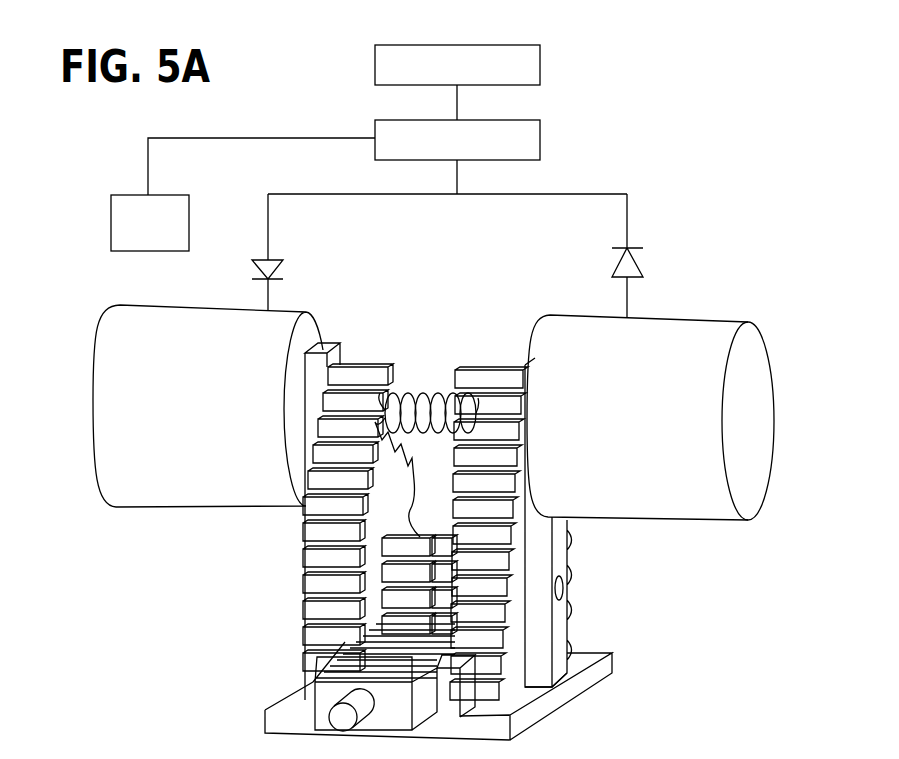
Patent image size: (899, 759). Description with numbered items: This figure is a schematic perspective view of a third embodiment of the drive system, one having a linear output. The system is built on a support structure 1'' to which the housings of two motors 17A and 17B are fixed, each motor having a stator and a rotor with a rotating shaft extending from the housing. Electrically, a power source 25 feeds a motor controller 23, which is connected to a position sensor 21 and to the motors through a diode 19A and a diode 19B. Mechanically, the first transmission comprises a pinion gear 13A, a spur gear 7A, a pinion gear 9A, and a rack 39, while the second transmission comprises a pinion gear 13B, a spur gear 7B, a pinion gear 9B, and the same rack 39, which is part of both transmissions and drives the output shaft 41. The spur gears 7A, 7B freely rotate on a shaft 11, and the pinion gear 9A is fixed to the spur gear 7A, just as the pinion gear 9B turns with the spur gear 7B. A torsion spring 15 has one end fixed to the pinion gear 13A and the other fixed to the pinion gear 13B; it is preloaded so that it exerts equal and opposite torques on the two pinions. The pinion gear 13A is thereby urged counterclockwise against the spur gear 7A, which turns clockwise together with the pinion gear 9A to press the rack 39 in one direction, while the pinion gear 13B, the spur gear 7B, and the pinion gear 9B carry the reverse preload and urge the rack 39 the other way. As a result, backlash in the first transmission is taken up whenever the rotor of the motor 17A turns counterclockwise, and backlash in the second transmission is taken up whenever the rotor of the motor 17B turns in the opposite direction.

The power source 25 is at (469, 79).
The motor controller 23 is at (469, 154).
The position sensor 21 is at (162, 235).
The diode 19A is at (283, 271).
The diode 19B is at (612, 270).
The motor 17A is at (112, 507).
The motor 17B is at (748, 520).
The pinion gear 13A is at (362, 387).
The pinion gear 13B is at (540, 390).
The spring 15 is at (455, 405).
The pinion gear 9A is at (428, 532).
The pinion gear 9B is at (450, 533).
The shaft 11 is at (563, 587).
The spur gear 7A is at (303, 630).
The spur gear 7B is at (571, 600).
The rack 39 is at (292, 695).
The output shaft 41 is at (318, 733).
The support structure 1'' is at (438, 684).